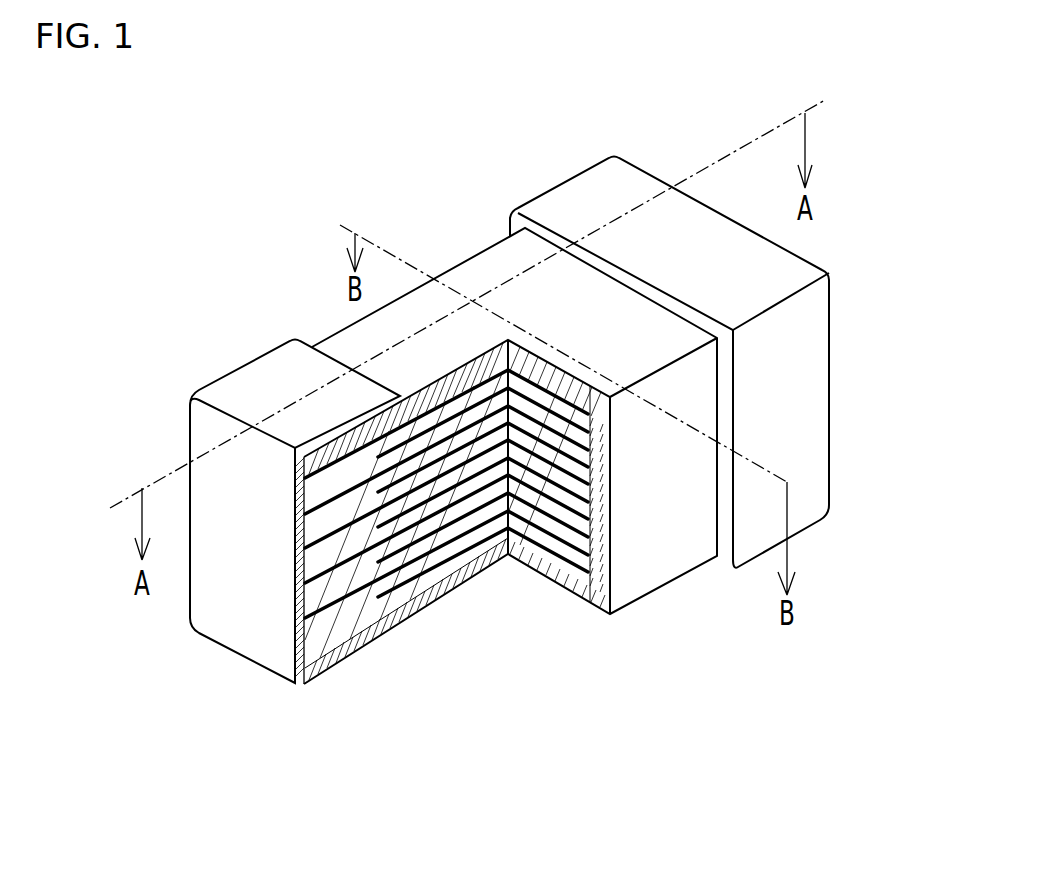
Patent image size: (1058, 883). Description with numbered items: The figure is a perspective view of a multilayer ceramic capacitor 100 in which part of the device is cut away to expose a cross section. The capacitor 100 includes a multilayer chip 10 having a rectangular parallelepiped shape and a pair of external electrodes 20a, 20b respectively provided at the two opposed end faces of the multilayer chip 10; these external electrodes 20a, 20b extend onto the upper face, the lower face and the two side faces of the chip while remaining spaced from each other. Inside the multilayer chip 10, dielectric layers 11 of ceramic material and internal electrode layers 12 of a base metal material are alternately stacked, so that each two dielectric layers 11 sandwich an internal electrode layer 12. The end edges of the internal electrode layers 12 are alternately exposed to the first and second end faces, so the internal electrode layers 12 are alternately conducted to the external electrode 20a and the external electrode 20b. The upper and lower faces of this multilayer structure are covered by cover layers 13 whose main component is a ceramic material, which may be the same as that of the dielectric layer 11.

The multilayer ceramic capacitor 100 is at (938, 84).
The multilayer chip 10 is at (475, 467).
The dielectric layer 11 is at (433, 538).
The internal electrode layer 12 is at (410, 596).
The cover layer 13 is at (477, 278).
The external electrode 20a is at (222, 376).
The external electrode 20b is at (567, 198).